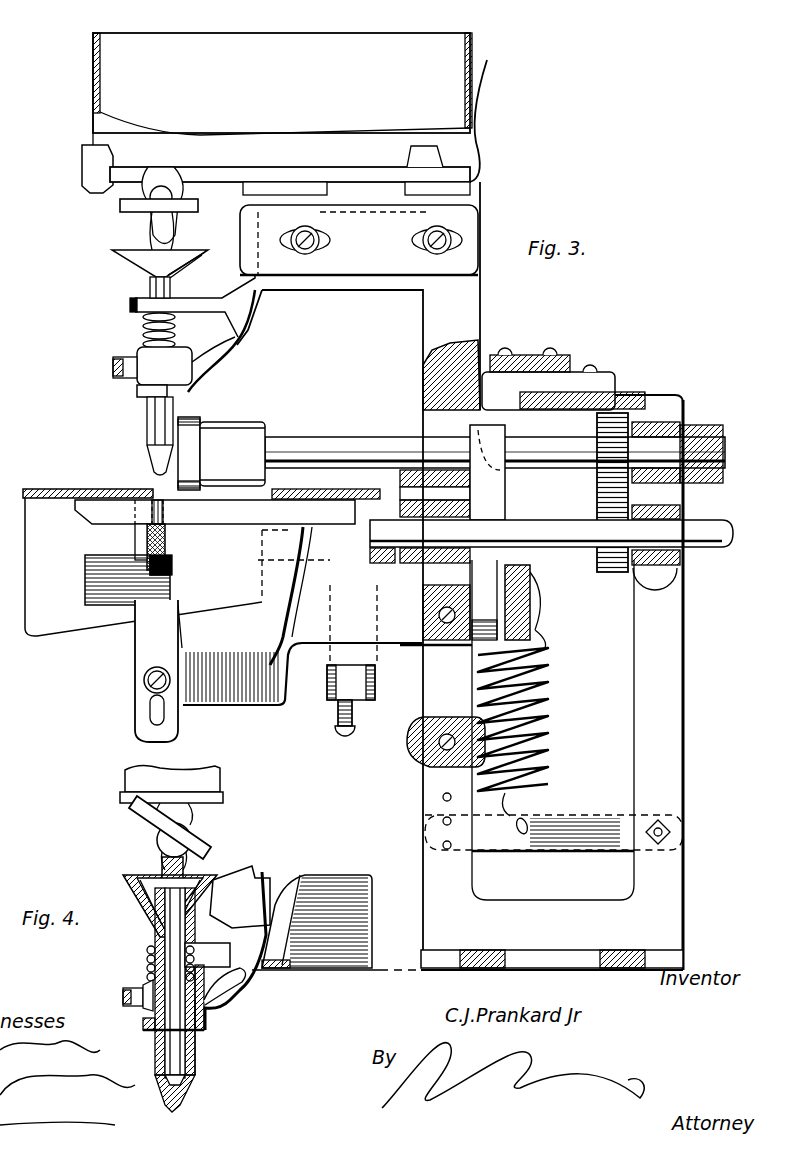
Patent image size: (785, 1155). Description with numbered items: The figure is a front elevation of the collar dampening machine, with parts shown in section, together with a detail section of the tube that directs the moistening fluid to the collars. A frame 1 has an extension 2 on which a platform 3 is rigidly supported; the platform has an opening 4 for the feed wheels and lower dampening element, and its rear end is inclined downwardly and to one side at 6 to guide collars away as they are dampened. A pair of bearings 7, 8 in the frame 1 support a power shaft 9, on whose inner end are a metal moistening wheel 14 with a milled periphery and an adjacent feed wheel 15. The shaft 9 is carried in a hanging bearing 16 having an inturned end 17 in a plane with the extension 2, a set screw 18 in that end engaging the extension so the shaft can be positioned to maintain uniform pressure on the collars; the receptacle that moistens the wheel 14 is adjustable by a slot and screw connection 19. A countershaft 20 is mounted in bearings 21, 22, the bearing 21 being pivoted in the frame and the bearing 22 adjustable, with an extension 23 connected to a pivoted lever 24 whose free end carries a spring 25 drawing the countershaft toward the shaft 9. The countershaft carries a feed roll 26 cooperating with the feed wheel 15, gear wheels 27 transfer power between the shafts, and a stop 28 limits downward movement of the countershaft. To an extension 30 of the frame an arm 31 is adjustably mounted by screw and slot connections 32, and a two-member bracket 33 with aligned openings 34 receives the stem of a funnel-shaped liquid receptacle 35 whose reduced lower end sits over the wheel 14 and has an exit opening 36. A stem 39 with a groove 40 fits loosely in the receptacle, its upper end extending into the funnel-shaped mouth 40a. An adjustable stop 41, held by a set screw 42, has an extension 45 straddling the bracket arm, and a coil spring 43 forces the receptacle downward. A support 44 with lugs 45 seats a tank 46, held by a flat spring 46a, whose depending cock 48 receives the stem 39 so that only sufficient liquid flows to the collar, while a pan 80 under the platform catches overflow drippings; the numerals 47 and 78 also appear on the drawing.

In FIG. 3, the frame 1 is at (531, 685).
In FIG. 3, the extension 2 is at (258, 644).
In FIG. 3, the platform 3 is at (68, 480).
In FIG. 3, the opening 4 is at (140, 492).
In FIG. 3, the inclined rear end of platform 6 is at (62, 636).
In FIG. 3, the bearing 7 is at (700, 570).
In FIG. 3, the bearing 8 is at (470, 505).
In FIG. 3, the power shaft 9 is at (577, 548).
In FIG. 3, the moistening wheel 14 is at (145, 536).
In FIG. 3, the feed wheel 15 is at (210, 640).
In FIG. 3, the hanging bearing 16 is at (335, 662).
In FIG. 3, the inturned end 17 is at (375, 682).
In FIG. 3, the set screw 18 is at (86, 570).
In FIG. 3, the slot and screw connection 19 is at (147, 685).
In FIG. 3, the countershaft 20 is at (358, 430).
In FIG. 3, the bearing 21 is at (683, 420).
In FIG. 3, the bearing 22 is at (428, 428).
In FIG. 3, the extension 23 is at (490, 580).
In FIG. 3, the pivoted lever 24 is at (535, 625).
In FIG. 3, the spring 25 is at (527, 732).
In FIG. 3, the feed roll 26 is at (221, 453).
In FIG. 3, the gear wheels 27 is at (598, 480).
In FIG. 3, the stop 28 is at (378, 488).
In FIG. 3, the extension 30 is at (398, 296).
In FIG. 3, the arm 31 is at (359, 240).
In FIG. 3, the screw and slot connections 32 is at (320, 235).
In FIG. 3, the bracket 33 is at (255, 310).
In FIG. 4, the bracket 33 is at (250, 903).
In FIG. 4, the alined opening 34 is at (173, 918).
In FIG. 3, the liquid receptacle 35 is at (150, 287).
In FIG. 4, the liquid receptacle 35 is at (188, 1058).
In FIG. 4, the exit opening 36 is at (180, 1094).
In FIG. 4, the stem 39 is at (180, 890).
In FIG. 4, the groove 40 is at (140, 922).
In FIG. 3, the funnel shaped mouth 40a is at (128, 258).
In FIG. 4, the funnel shaped mouth 40a is at (139, 901).
In FIG. 3, the adjustable stop 41 is at (186, 367).
In FIG. 3, the set screw 42 is at (118, 380).
In FIG. 4, the set screw 42 is at (135, 1004).
In FIG. 3, the coil spring 43 is at (142, 330).
In FIG. 4, the coil spring 43 is at (188, 962).
In FIG. 3, the support 44 is at (370, 165).
In FIG. 3, the lugs 45 is at (108, 160).
In FIG. 4, the lugs 45 is at (225, 978).
In FIG. 3, the tank 46 is at (282, 89).
In FIG. 3, the flat spring 46a is at (476, 128).
In FIG. 4, the collar 47 is at (150, 1018).
In FIG. 3, the cock 48 is at (178, 215).
In FIG. 4, the cock 48 is at (174, 817).
In FIG. 3, the screw 78 is at (340, 733).
In FIG. 4, the pan 80 is at (362, 862).